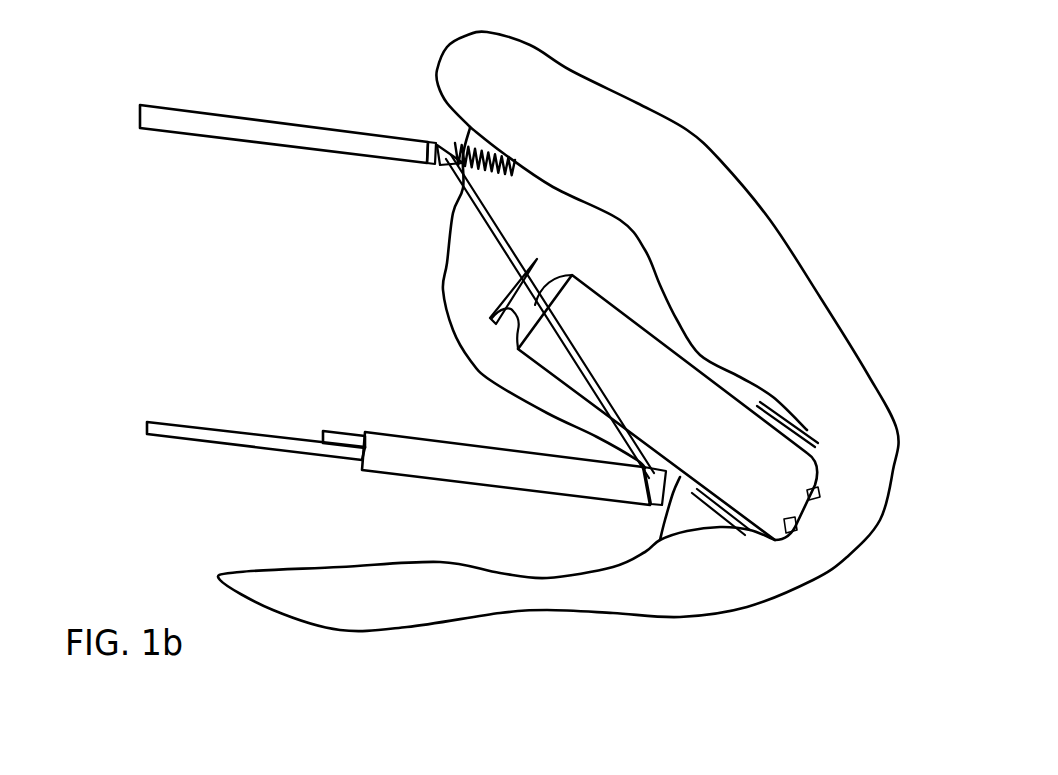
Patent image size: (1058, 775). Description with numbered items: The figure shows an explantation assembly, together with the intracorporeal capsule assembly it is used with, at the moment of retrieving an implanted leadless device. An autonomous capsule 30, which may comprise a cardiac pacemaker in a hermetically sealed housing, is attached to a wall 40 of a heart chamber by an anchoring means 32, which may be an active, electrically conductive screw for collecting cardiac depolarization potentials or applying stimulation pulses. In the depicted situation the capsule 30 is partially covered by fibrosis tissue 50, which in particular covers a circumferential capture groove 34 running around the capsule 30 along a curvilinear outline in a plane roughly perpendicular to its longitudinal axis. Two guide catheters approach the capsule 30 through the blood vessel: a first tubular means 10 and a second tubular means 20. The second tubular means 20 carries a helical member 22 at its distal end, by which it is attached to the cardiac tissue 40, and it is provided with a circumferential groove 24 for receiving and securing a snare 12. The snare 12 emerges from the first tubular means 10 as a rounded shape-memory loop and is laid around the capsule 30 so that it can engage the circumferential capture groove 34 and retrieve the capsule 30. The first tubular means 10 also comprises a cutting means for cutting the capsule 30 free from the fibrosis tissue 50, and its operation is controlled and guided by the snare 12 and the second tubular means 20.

The first tubular means 10 is at (398, 456).
The snare 12 is at (500, 247).
The second tubular means 20 is at (232, 120).
The helical member 22 is at (497, 143).
The circumferential groove 24 is at (437, 144).
The autonomous capsule 30 is at (763, 467).
The anchoring means 32 is at (788, 422).
The circumferential capture groove 34 is at (492, 318).
The wall of a heart chamber 40 is at (832, 330).
The fibrosis tissue 50 is at (455, 230).